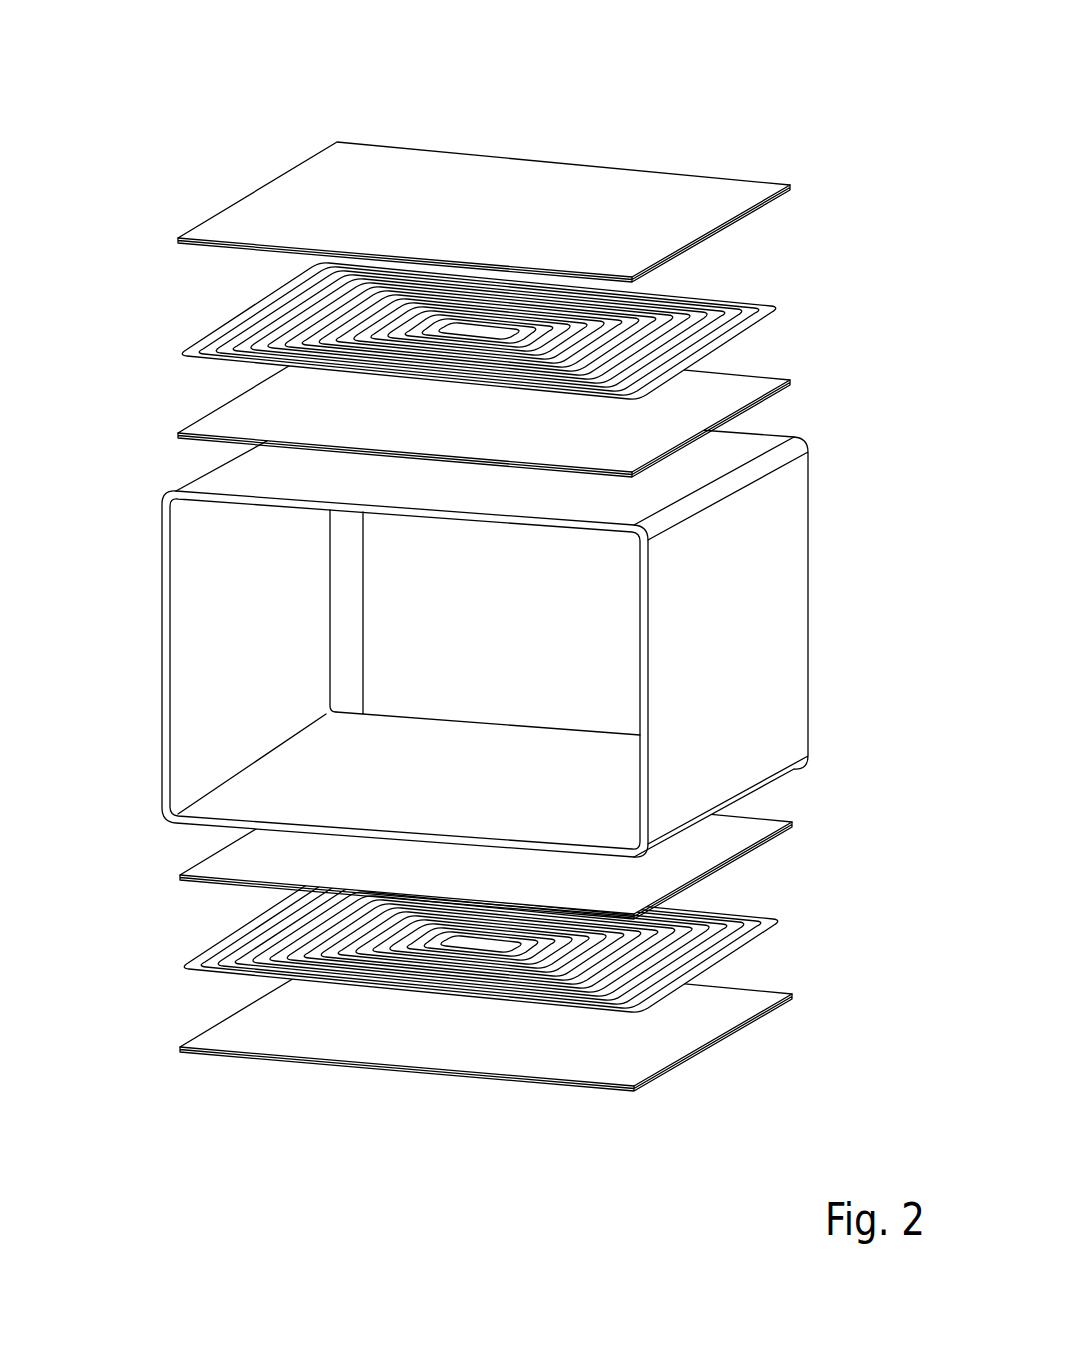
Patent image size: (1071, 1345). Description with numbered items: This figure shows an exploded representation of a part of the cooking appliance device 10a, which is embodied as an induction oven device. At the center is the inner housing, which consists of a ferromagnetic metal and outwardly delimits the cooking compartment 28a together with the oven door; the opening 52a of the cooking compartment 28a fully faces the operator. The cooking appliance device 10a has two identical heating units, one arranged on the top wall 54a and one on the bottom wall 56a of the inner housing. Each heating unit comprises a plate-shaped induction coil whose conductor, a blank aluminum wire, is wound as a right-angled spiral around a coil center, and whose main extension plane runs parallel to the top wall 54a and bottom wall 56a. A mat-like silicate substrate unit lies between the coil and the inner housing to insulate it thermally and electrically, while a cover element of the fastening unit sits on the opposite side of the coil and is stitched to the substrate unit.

The cooking appliance device 10a is at (262, 107).
The bottom wall 56a is at (765, 793).
The top wall 54a is at (248, 468).
The opening 52a is at (232, 612).
The cooking compartment 28a is at (418, 684).